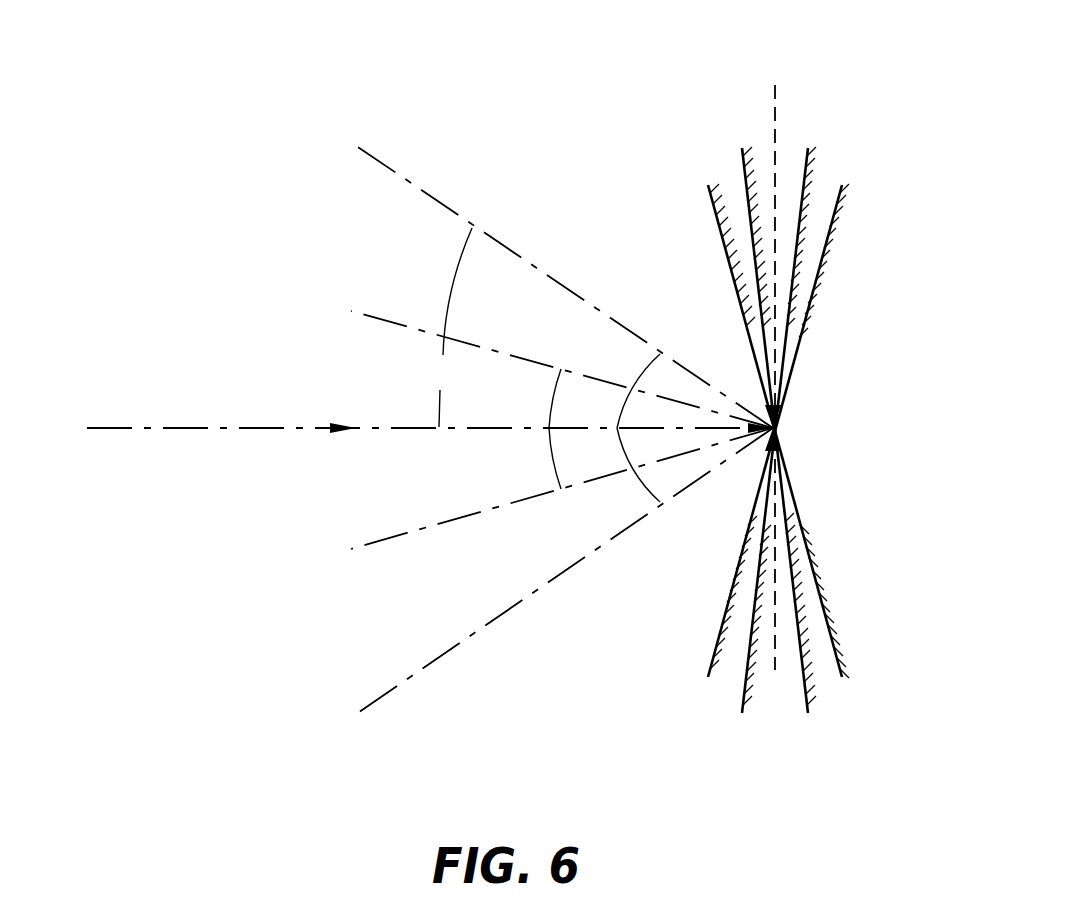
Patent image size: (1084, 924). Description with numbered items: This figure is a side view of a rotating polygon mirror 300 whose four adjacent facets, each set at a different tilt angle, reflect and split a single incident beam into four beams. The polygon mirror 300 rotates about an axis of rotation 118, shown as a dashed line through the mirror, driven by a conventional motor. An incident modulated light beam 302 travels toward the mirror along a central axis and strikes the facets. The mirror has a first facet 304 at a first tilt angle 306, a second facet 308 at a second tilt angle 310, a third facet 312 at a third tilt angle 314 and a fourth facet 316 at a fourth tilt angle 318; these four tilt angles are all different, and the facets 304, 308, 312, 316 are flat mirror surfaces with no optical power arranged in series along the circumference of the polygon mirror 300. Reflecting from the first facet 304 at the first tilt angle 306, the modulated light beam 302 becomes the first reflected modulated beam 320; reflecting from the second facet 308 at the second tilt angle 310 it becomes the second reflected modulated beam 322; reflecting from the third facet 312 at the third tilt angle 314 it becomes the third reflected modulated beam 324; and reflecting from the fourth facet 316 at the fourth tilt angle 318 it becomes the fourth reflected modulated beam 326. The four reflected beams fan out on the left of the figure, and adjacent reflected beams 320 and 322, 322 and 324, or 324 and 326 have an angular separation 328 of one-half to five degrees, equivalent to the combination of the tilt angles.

The rotating polygon mirror 300 is at (960, 36).
The axis of rotation 118 is at (778, 112).
The modulated light beam 302 is at (300, 427).
The first facet 304 is at (842, 187).
The first tilt angle 306 is at (640, 362).
The second facet 308 is at (808, 150).
The second tilt angle 310 is at (553, 386).
The third facet 312 is at (742, 150).
The third tilt angle 314 is at (550, 463).
The fourth facet 316 is at (709, 207).
The fourth tilt angle 318 is at (640, 500).
The first reflected modulated beam 320 is at (521, 255).
The second reflected modulated beam 322 is at (424, 329).
The third reflected modulated beam 324 is at (423, 527).
The fourth reflected modulated beam 326 is at (537, 596).
The angular separation 328 is at (444, 327).